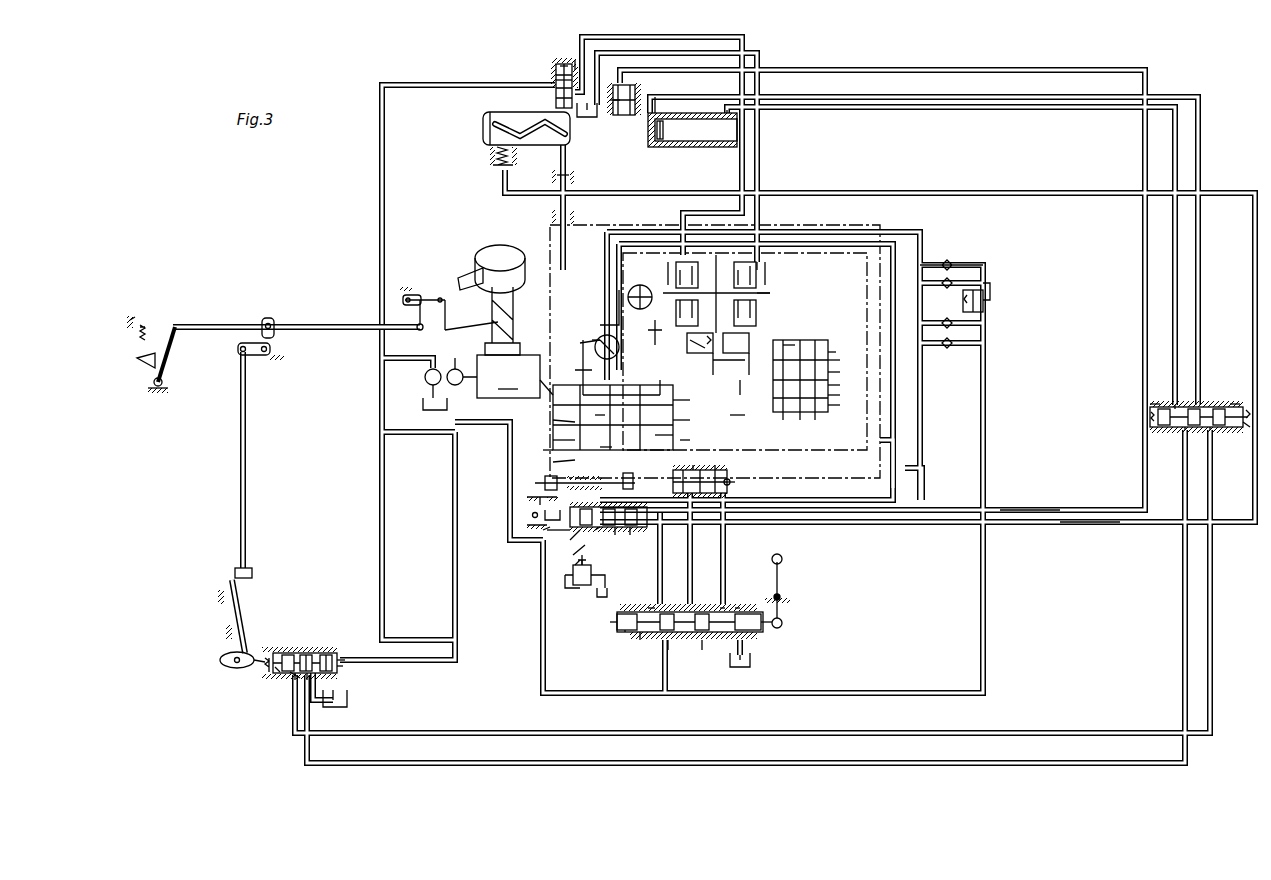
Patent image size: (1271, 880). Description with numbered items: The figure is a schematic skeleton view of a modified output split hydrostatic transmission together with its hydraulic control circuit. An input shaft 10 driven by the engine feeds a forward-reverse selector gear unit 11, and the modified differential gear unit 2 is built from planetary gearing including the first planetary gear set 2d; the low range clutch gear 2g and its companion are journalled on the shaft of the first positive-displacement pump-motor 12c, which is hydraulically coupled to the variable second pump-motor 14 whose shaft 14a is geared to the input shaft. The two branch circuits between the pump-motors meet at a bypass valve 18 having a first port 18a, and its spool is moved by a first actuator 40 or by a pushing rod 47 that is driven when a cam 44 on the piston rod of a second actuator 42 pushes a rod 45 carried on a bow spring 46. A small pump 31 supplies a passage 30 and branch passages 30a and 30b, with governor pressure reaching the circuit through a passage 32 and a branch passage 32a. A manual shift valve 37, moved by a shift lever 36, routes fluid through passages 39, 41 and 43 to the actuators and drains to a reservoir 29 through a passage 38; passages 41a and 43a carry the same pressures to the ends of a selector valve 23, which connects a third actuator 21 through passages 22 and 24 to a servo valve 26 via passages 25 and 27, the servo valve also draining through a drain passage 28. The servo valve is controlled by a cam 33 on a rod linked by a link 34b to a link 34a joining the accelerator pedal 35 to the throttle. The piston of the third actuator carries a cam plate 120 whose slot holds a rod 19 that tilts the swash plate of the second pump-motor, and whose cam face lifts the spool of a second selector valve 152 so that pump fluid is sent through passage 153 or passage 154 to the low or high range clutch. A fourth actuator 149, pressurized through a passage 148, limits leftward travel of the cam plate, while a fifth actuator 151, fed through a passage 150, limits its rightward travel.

The differential gear unit 2 is at (843, 253).
The gear of low range clutch 2g is at (694, 270).
The first planetary gear set 2d is at (803, 346).
The input shaft 10 is at (508, 387).
The selector gear unit 11 is at (703, 439).
The first positive-displacement pump-motor 12c is at (628, 292).
The second positive-displacement pump-motor 14 is at (606, 335).
The shaft of the second pump-motor 14a is at (513, 328).
The bypass valve 18 is at (568, 583).
The first port 18a is at (585, 476).
The rod 19 is at (568, 172).
The third actuator 21 is at (707, 148).
The passage 22 is at (944, 100).
The selector valve 23 is at (1139, 436).
The passage 24 is at (1015, 110).
The passage 25 is at (803, 763).
The servo valve 26 is at (296, 622).
The passage 27 is at (752, 733).
The drain passage 28 is at (294, 685).
The reservoir 29 is at (348, 700).
The passage 30 is at (382, 525).
The branch passage 30a is at (437, 433).
The branch passage 30b is at (382, 150).
The small pump 31 is at (425, 377).
The passage 32 is at (455, 490).
The branch passage 32a is at (508, 447).
The cam 33 is at (225, 666).
The link 34a is at (318, 327).
The link 34b is at (243, 415).
The accelerator pedal 35 is at (173, 345).
The shift lever 36 is at (781, 583).
The manual shift valve 37 is at (786, 623).
The passage 38 is at (663, 670).
The passage 39 is at (662, 572).
The first actuator 40 is at (648, 512).
The passage 41 is at (688, 585).
The passage 41a is at (1028, 510).
The second actuator 42 is at (705, 498).
The passage 43 is at (722, 575).
The passage 43a is at (1100, 522).
The cam 44 is at (545, 484).
The rod 45 is at (525, 499).
The bow spring 46 is at (545, 512).
The pushing rod 47 is at (560, 530).
The cam plate 120 is at (485, 138).
The passage 148 is at (1043, 193).
The fourth actuator 149 is at (492, 170).
The passage 150 is at (870, 78).
The fifth actuator 151 is at (627, 118).
The second selector valve 152 is at (540, 48).
The passage 153 is at (645, 43).
The passage 154 is at (685, 53).